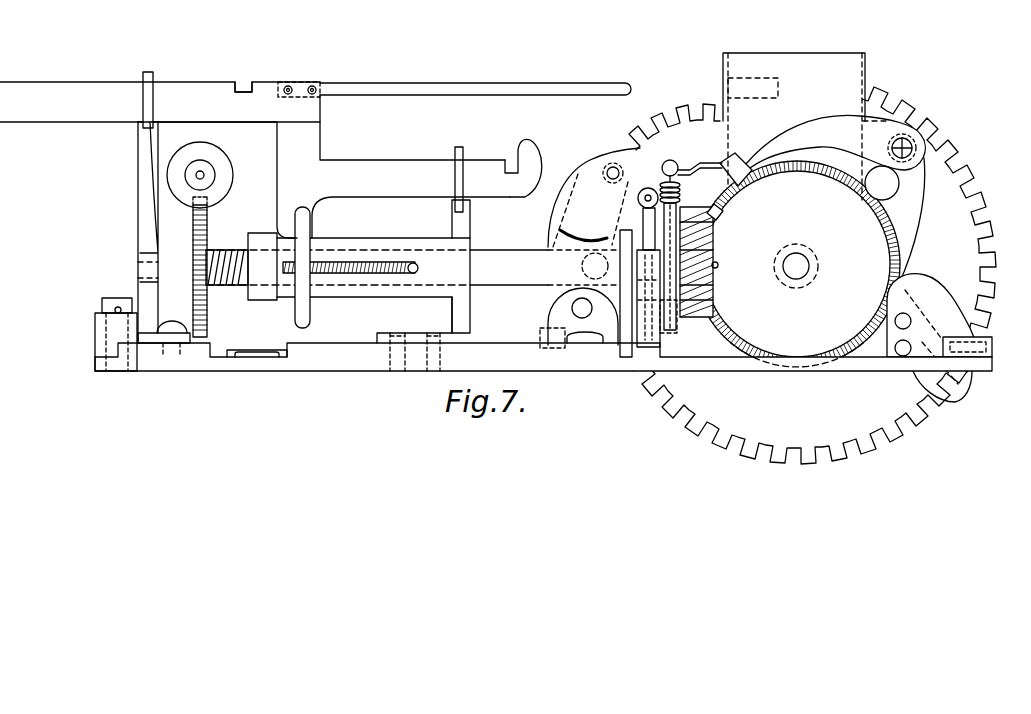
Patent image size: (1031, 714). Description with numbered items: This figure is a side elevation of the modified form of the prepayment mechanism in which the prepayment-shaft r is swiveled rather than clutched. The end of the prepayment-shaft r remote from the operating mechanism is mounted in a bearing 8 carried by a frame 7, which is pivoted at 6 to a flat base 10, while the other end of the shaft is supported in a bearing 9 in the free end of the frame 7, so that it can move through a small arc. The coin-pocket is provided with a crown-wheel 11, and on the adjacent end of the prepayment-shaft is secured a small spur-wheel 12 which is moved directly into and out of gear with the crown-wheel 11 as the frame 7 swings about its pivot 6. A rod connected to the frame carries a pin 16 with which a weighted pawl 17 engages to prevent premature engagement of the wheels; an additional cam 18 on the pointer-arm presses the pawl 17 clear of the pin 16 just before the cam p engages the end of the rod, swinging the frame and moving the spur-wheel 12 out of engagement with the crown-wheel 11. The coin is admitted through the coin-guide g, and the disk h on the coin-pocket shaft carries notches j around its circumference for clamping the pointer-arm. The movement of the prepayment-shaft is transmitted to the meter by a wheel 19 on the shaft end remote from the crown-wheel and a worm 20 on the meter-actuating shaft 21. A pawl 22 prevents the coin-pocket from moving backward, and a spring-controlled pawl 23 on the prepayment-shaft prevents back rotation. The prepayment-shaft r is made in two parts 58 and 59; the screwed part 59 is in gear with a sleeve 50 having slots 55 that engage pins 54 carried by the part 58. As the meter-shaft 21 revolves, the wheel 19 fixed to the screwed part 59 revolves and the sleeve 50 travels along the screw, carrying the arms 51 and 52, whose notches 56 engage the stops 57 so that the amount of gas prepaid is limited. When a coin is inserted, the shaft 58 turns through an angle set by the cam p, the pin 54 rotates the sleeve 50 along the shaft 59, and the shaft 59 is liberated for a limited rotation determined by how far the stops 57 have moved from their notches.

The pivot 6 is at (108, 338).
The frame 7 is at (150, 323).
The bearing 8 is at (143, 262).
The bearing 9 is at (586, 293).
The flat base 10 is at (298, 362).
The crown-wheel 11 is at (797, 264).
The spur-wheel 12 is at (715, 243).
The pin 16 is at (556, 268).
The weighted pawl 17 is at (594, 197).
The cam 18 is at (992, 349).
The wheel 19 is at (208, 241).
The worm 20 is at (216, 178).
The meter-actuating shaft 21 is at (203, 173).
The pawl 22 is at (790, 138).
The pawl 23 is at (656, 333).
The sleeve 50 is at (368, 240).
The arm 51 is at (160, 102).
The arm 52 is at (454, 140).
The pin 54 is at (413, 275).
The slot 55 is at (292, 272).
The notch 56 is at (246, 80).
The stop 57 is at (147, 70).
The shaft part 58 is at (510, 257).
The screwed shaft part 59 is at (232, 284).
The coin-guide g is at (806, 126).
The disk h is at (811, 278).
The notches j is at (963, 178).
The cam p is at (916, 370).
The prepayment-shaft r is at (489, 271).